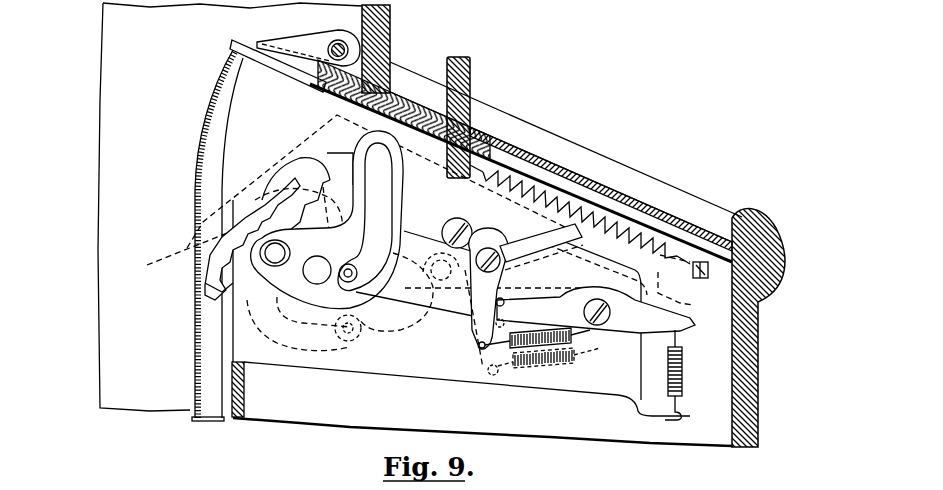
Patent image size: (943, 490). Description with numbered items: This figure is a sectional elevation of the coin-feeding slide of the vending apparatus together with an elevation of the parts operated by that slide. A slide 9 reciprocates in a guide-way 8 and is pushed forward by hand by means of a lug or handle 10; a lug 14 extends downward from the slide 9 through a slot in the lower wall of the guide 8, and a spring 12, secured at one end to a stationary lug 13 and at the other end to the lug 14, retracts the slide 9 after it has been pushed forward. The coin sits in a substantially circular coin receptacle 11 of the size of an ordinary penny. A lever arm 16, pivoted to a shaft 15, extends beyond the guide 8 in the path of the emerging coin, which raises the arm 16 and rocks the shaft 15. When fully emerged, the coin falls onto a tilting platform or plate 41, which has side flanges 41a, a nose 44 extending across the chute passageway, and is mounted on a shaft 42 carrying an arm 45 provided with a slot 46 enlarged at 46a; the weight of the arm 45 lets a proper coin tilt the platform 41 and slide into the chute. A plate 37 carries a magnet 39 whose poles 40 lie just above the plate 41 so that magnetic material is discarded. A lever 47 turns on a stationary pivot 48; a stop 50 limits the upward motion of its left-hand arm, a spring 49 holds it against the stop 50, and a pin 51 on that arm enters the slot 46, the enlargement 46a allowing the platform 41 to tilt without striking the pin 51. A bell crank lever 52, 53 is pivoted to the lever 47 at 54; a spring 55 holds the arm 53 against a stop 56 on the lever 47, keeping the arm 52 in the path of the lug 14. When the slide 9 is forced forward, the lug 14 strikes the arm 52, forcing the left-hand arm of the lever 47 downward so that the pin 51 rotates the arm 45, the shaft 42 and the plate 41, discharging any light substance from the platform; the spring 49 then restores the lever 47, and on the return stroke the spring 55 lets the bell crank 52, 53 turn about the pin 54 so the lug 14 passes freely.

The guide-way 8 is at (710, 232).
The slide 9 is at (563, 177).
The lug or handle 10 is at (470, 68).
The coin receptacle 11 is at (292, 64).
The spring 12 is at (632, 205).
The stationary lug 13 is at (700, 272).
The lug 14 is at (442, 182).
The shaft 15 is at (338, 40).
The lever arm 16 is at (309, 27).
The plate 37 is at (196, 370).
The magnet 39 is at (215, 419).
The poles 40 is at (225, 232).
The tilting platform or plate 41 is at (290, 210).
The side flanges 41a is at (295, 167).
The shaft 42 is at (275, 243).
The nose 44 is at (237, 283).
The arm 45 is at (323, 263).
The slot 46 is at (400, 240).
The enlargement of slot 46a is at (280, 280).
The lever 47 is at (463, 250).
The stationary pivot 48 is at (590, 311).
The spring 49 is at (683, 385).
The stop 50 is at (454, 219).
The pin 51 is at (360, 280).
The bell crank lever arm 52 is at (540, 243).
The bell crank lever arm 53 is at (478, 338).
The pivot pin 54 is at (488, 248).
The spring 55 is at (552, 350).
The stop 56 is at (505, 302).